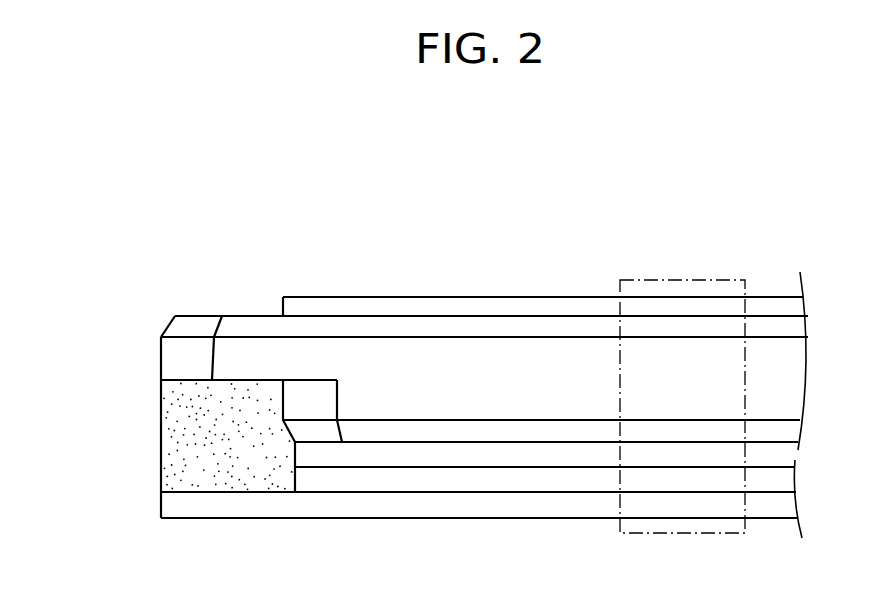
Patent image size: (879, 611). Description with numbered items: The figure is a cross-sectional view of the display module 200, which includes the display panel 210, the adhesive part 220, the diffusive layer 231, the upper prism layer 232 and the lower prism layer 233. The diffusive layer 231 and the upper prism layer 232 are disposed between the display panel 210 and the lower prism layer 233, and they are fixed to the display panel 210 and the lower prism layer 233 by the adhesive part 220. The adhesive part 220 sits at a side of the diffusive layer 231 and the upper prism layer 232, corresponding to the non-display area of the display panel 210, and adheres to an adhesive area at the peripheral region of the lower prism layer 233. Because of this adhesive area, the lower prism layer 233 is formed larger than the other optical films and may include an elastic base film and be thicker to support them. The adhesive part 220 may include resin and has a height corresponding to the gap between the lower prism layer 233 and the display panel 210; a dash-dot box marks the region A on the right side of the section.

The display module 200 is at (323, 225).
The display panel 210 is at (163, 357).
The adhesive part 220 is at (163, 449).
The diffusive layer 231 is at (390, 457).
The upper prism layer 232 is at (465, 480).
The lower prism layer 233 is at (558, 508).
The region A is at (650, 535).